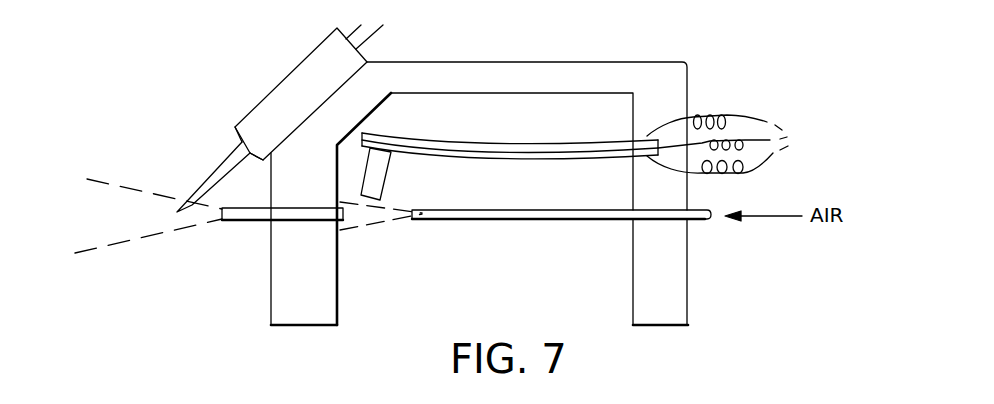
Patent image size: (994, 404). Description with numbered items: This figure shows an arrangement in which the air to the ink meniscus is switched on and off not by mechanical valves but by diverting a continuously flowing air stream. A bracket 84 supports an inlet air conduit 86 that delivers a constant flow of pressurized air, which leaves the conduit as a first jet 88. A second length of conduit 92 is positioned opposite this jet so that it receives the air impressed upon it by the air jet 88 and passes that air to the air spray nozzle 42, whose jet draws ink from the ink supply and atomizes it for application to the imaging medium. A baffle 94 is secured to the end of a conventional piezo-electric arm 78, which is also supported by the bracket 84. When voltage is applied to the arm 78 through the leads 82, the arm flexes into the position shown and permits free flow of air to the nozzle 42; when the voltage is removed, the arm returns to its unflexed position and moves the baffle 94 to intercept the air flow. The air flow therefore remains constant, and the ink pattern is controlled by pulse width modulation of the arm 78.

The air spray nozzle 42 is at (218, 221).
The piezo-electric arm 78 is at (515, 141).
The leads 82 is at (732, 144).
The bracket 84 is at (688, 87).
The inlet air conduit 86 is at (585, 220).
The first jet 88 is at (416, 220).
The second length of conduit 92 is at (262, 221).
The baffle 94 is at (386, 184).